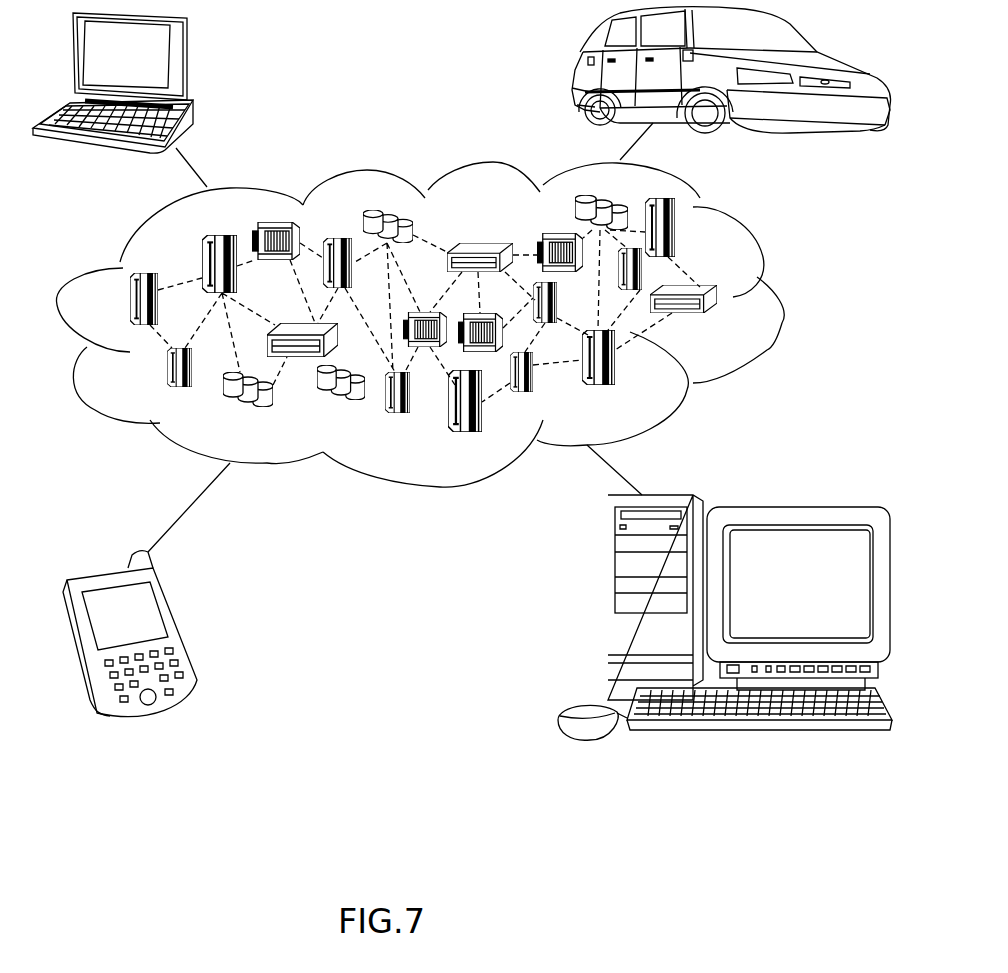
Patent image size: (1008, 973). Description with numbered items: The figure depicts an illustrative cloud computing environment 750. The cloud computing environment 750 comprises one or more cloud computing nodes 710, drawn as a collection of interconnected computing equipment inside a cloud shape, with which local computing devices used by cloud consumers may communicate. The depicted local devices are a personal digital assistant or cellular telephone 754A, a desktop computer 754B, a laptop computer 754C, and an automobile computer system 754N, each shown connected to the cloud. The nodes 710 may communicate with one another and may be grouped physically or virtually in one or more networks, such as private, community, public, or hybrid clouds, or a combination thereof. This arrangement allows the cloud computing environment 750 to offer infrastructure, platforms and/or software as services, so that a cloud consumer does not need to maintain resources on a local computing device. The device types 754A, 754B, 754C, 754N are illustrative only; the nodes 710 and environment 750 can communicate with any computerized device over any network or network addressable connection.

The cloud computing nodes 710 is at (742, 320).
The cloud computing environment 750 is at (762, 262).
The personal digital assistant or cellular telephone 754A is at (177, 632).
The desktop computer 754B is at (608, 605).
The laptop computer 754C is at (187, 60).
The automobile computer system 754N is at (580, 66).